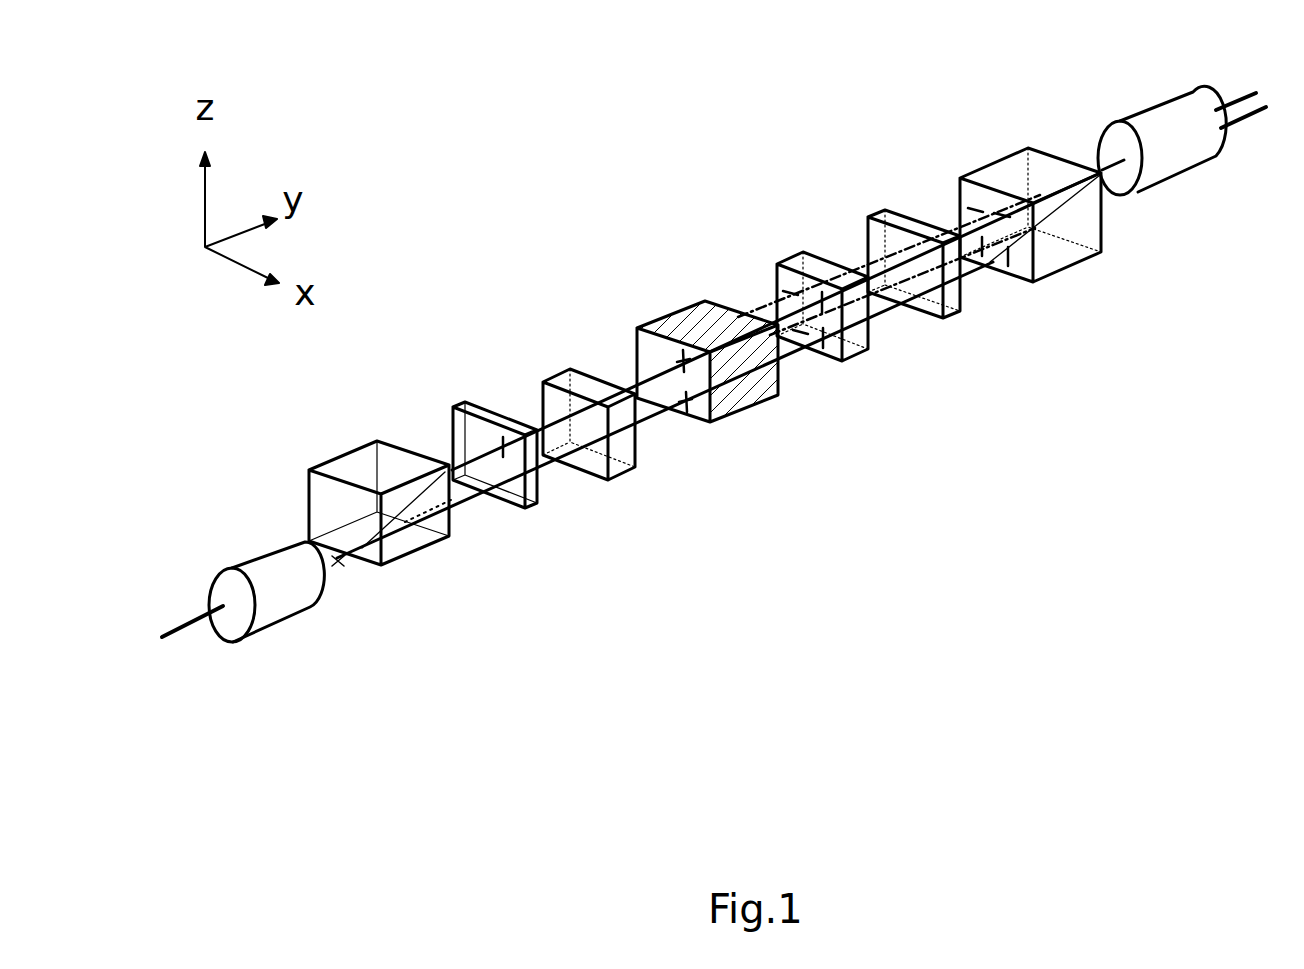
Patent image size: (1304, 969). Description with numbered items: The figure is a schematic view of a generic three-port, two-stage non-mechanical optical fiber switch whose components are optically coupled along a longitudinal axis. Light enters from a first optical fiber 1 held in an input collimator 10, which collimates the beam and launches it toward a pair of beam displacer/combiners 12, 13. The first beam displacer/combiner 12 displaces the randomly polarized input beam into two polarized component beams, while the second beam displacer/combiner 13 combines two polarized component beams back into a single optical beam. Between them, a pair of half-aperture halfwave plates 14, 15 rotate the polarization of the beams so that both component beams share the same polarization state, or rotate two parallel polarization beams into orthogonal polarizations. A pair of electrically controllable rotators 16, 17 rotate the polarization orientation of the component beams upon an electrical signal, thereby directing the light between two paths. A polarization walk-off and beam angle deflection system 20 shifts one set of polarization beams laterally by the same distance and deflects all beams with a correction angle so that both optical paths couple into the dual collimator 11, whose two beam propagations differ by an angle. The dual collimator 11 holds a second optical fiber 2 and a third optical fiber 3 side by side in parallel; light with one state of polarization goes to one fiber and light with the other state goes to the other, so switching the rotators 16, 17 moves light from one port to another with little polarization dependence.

The first optical fiber 1 is at (192, 644).
The second optical fiber 2 is at (1236, 75).
The third optical fiber 3 is at (1244, 139).
The collimator 10 is at (266, 565).
The dual collimator 11 is at (1162, 117).
The beam displacer/combiner 12 is at (382, 477).
The beam displacer/combiner 13 is at (1023, 189).
The half-aperture halfwave plate 14 is at (481, 428).
The half-aperture halfwave plate 15 is at (902, 231).
The electrically controllable rotator 16 is at (577, 386).
The electrically controllable rotator 17 is at (808, 274).
The polarization walk-off and beam angle deflection system 20 is at (703, 343).